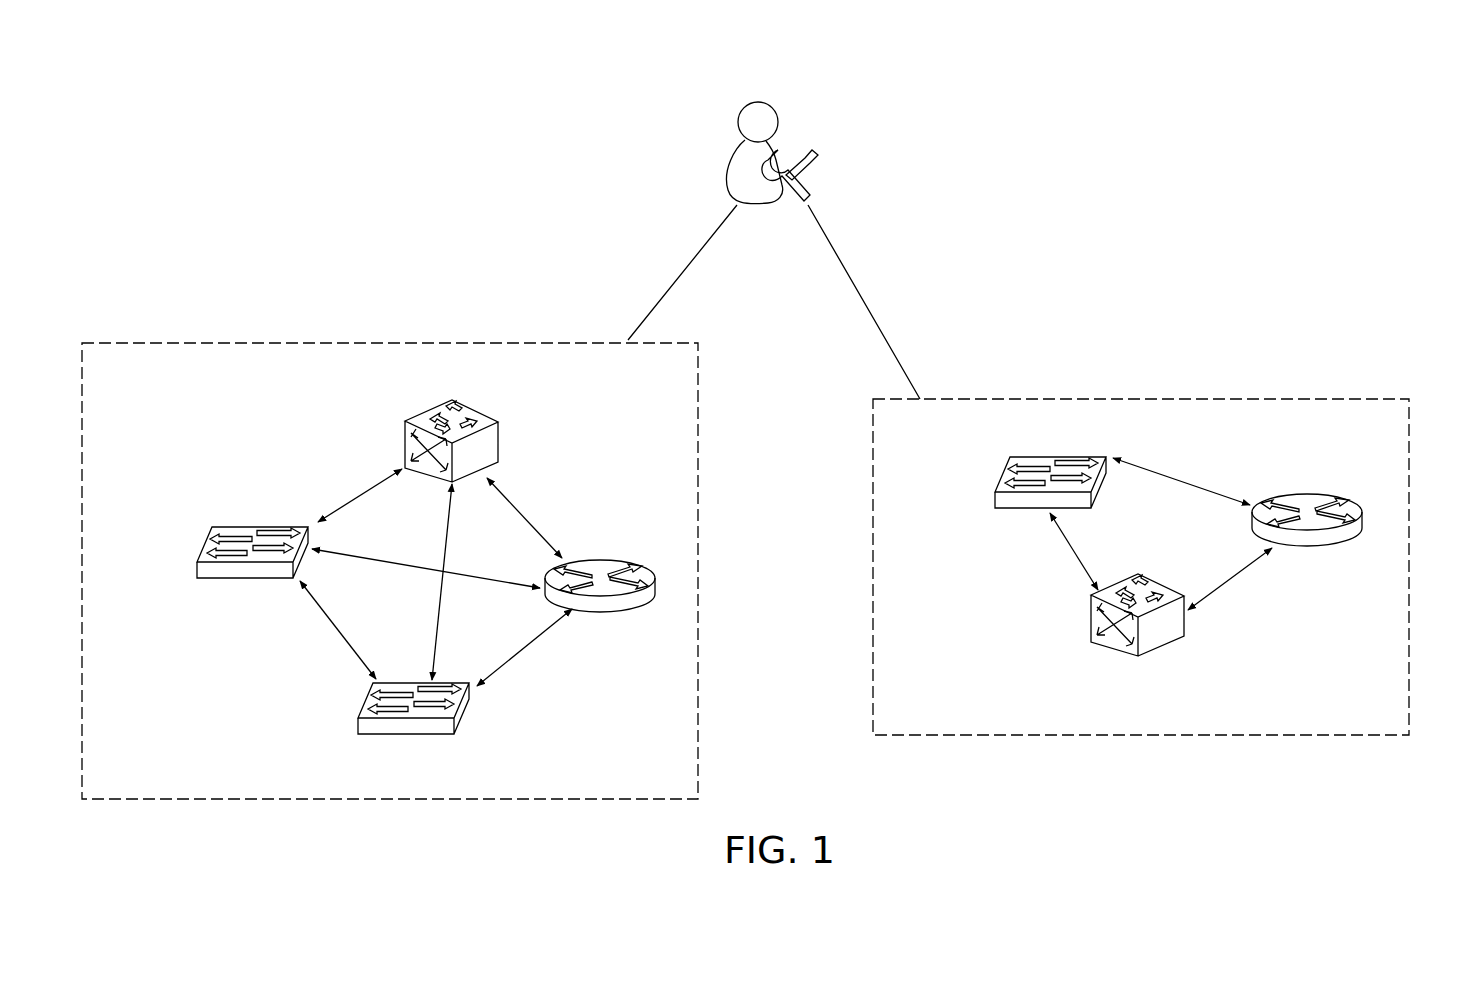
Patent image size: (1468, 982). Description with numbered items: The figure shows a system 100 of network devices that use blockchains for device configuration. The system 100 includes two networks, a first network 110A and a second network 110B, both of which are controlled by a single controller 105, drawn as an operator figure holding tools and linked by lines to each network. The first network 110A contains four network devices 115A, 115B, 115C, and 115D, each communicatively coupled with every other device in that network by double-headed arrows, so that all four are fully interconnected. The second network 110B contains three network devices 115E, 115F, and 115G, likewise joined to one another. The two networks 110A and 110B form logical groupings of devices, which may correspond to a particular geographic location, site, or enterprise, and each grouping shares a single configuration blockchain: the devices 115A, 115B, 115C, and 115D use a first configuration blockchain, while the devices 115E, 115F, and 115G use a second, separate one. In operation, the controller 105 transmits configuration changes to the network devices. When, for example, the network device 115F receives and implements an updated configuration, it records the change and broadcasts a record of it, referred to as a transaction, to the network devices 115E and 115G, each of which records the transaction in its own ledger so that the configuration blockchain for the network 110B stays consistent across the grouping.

The system 100 is at (1188, 128).
The controller 105 is at (740, 112).
The network 110A is at (272, 342).
The network 110B is at (1368, 399).
The network device 115A is at (405, 440).
The network device 115B is at (197, 550).
The network device 115C is at (358, 696).
The network device 115D is at (600, 560).
The network device 115E is at (995, 475).
The network device 115F is at (1092, 628).
The network device 115G is at (1315, 493).